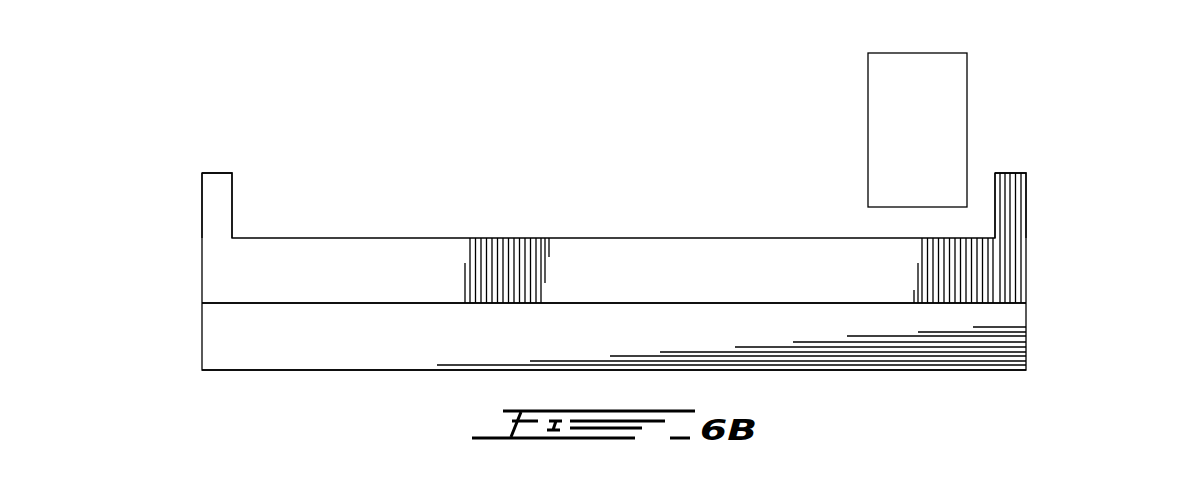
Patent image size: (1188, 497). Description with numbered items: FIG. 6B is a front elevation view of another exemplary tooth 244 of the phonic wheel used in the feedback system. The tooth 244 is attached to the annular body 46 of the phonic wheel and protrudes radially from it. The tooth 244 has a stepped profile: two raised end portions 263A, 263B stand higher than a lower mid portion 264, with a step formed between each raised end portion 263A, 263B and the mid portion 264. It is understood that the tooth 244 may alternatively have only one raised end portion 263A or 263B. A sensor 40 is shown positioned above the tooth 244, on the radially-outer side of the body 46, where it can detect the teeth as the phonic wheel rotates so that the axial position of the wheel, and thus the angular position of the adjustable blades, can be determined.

The sensor 40 is at (883, 103).
The raised end portion 263B is at (227, 193).
The raised end portion 263A is at (1006, 195).
The mid portion 264 is at (508, 258).
The tooth 244 is at (990, 278).
The body 46 is at (990, 333).